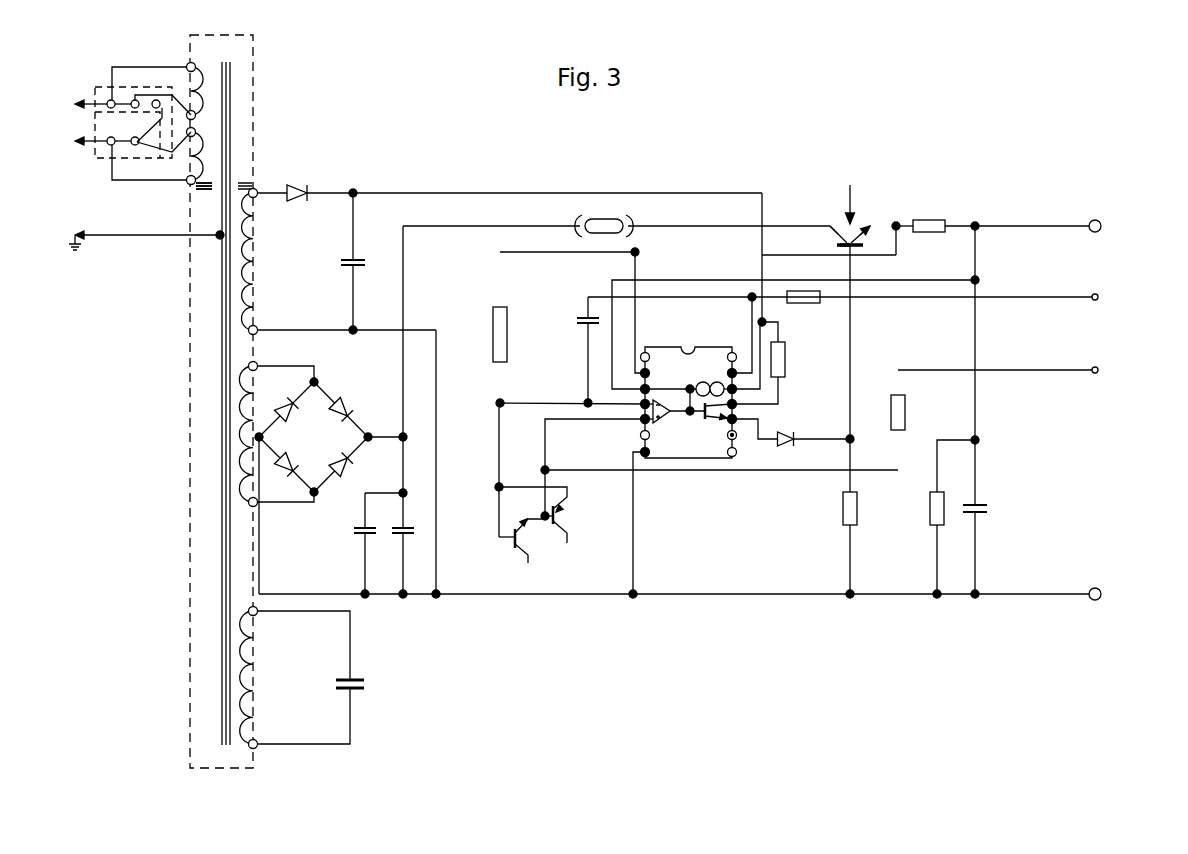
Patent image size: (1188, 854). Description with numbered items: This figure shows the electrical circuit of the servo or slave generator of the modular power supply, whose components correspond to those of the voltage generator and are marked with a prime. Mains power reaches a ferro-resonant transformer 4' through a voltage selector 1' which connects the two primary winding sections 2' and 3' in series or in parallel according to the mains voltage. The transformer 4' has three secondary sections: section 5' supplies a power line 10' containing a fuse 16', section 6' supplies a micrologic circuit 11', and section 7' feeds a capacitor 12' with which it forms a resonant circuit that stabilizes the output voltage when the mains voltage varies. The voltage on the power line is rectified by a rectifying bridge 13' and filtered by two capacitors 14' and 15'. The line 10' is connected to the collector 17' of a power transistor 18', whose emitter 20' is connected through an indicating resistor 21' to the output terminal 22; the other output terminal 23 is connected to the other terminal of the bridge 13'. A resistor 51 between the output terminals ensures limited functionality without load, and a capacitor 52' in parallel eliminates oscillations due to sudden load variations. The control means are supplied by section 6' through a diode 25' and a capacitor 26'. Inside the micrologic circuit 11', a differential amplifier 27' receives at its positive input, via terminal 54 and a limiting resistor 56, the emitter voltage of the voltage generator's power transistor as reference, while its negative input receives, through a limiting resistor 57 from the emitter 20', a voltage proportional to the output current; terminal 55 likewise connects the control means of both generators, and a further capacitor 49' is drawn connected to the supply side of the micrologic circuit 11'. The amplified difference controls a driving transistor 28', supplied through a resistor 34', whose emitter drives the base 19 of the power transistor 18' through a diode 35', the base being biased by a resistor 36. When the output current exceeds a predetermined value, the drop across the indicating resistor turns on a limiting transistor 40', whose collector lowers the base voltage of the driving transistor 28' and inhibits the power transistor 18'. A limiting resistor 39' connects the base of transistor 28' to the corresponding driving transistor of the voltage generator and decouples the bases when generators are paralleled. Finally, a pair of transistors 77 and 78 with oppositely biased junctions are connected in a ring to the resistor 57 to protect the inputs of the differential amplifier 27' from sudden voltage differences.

The voltage selector 1' is at (125, 110).
The winding section 2' is at (204, 112).
The winding section 3' is at (204, 205).
The transformer 4' is at (233, 401).
The secondary-winding section 5' is at (163, 247).
The secondary-winding section 6' is at (246, 423).
The secondary-winding section 7' is at (247, 665).
The power line 10' is at (423, 410).
The micrologic circuit 11' is at (689, 387).
The capacitor 12' is at (365, 670).
The rectifying bridge 13' is at (313, 437).
The capacitor 14' is at (351, 543).
The capacitor 15' is at (393, 543).
The fuse 16' is at (604, 215).
The collector 17' is at (824, 214).
The power transistor 18' is at (850, 203).
The base 19 is at (843, 250).
The emitter 20' is at (876, 214).
The indicating resistor 21' is at (930, 213).
The output terminal 22 is at (1091, 221).
The terminal 23 is at (1092, 601).
The diode 25' is at (310, 180).
The capacitor 26' is at (364, 261).
The differential amplifier 27' is at (675, 417).
The driving transistor 28' is at (711, 427).
The resistor 34' is at (796, 359).
The diode 35' is at (801, 426).
The resistor 36 is at (843, 514).
The limiting resistor 39' is at (805, 310).
The limiting transistor 40' is at (688, 372).
The capacitor 49' is at (574, 346).
The resistor 51 is at (931, 498).
The capacitor 52' is at (989, 521).
The terminal 54 is at (1092, 372).
The terminal 55 is at (1092, 300).
The limiting resistor 56 is at (905, 414).
The limiting resistor 57 is at (508, 338).
The transistor 77 is at (513, 545).
The transistor 78 is at (552, 528).